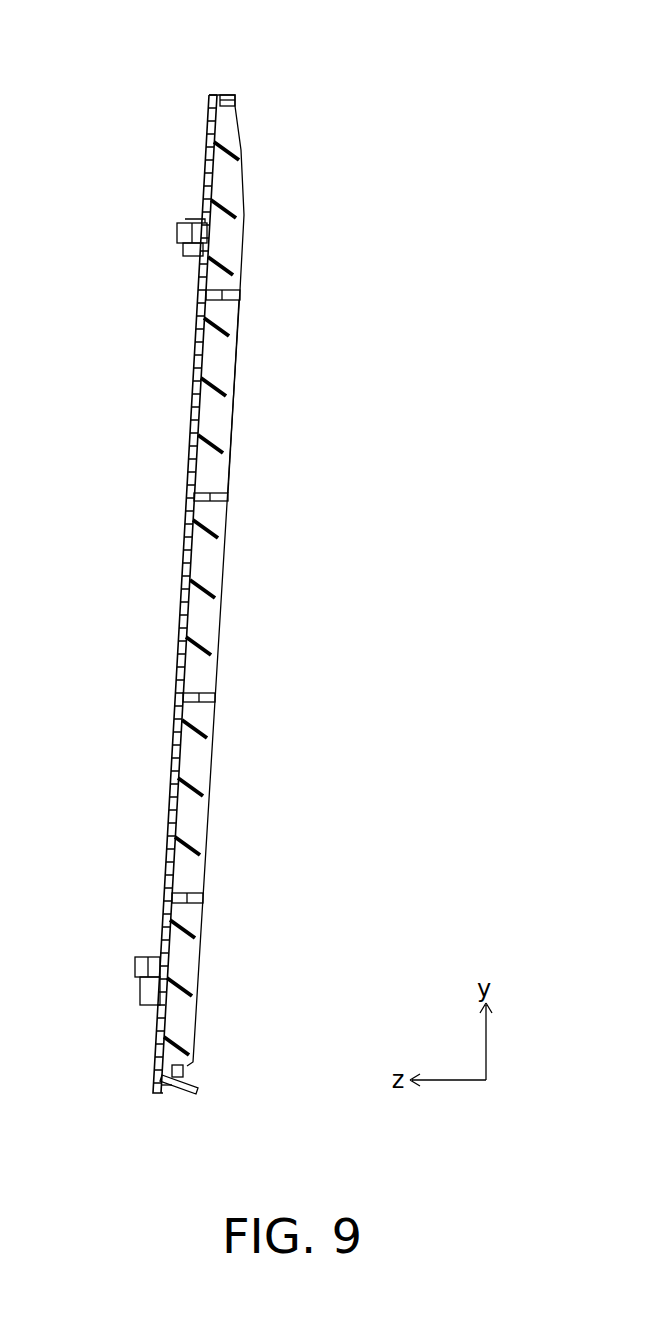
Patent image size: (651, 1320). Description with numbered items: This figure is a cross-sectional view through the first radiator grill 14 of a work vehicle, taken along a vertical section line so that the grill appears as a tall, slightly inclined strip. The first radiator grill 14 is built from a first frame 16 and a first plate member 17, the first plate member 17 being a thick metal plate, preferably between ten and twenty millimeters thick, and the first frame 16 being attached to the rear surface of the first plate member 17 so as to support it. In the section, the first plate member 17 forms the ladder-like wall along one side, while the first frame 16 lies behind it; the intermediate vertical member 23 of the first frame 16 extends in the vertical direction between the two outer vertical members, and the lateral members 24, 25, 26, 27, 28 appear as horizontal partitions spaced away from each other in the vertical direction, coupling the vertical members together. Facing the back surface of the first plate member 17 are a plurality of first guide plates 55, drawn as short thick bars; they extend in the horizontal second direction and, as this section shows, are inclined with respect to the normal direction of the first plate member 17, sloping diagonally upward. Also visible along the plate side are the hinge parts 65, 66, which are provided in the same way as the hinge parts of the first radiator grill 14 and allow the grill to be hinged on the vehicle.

The first radiator grill 14 is at (237, 94).
The first frame 16 is at (237, 607).
The first plate member 17 is at (187, 429).
The intermediate vertical member 23 is at (226, 414).
The lateral member 24 is at (228, 95).
The lateral member 25 is at (238, 297).
The lateral member 26 is at (229, 498).
The lateral member 27 is at (216, 699).
The lateral member 28 is at (204, 899).
The first guide plate 55 is at (224, 145).
The hinge part 65 is at (177, 233).
The hinge part 66 is at (136, 968).